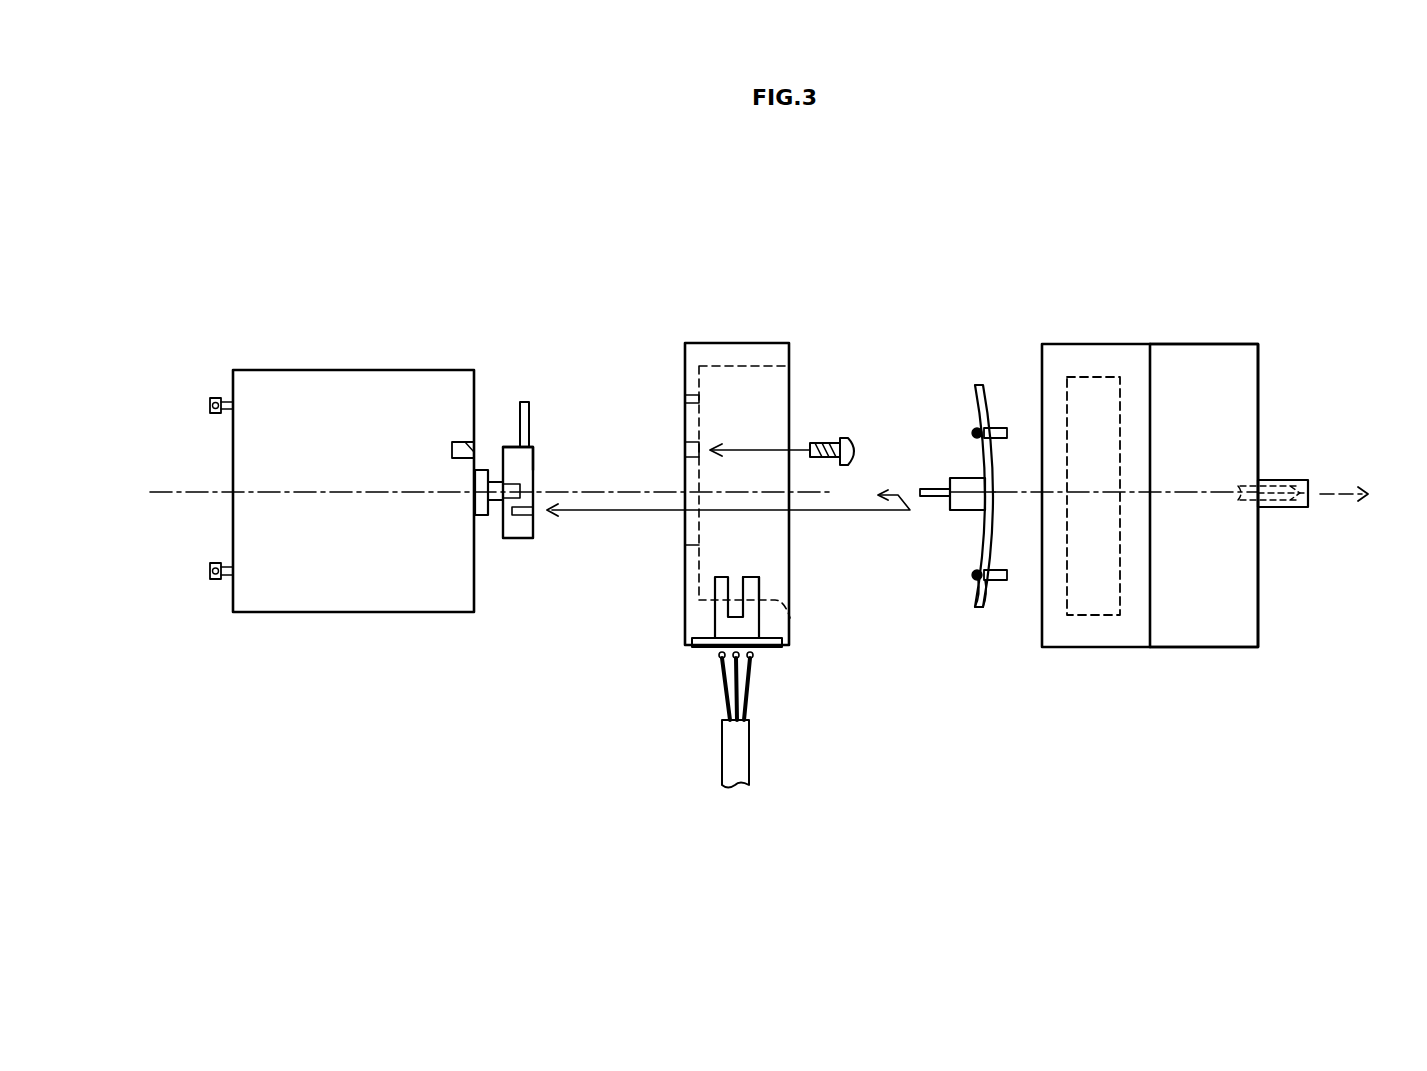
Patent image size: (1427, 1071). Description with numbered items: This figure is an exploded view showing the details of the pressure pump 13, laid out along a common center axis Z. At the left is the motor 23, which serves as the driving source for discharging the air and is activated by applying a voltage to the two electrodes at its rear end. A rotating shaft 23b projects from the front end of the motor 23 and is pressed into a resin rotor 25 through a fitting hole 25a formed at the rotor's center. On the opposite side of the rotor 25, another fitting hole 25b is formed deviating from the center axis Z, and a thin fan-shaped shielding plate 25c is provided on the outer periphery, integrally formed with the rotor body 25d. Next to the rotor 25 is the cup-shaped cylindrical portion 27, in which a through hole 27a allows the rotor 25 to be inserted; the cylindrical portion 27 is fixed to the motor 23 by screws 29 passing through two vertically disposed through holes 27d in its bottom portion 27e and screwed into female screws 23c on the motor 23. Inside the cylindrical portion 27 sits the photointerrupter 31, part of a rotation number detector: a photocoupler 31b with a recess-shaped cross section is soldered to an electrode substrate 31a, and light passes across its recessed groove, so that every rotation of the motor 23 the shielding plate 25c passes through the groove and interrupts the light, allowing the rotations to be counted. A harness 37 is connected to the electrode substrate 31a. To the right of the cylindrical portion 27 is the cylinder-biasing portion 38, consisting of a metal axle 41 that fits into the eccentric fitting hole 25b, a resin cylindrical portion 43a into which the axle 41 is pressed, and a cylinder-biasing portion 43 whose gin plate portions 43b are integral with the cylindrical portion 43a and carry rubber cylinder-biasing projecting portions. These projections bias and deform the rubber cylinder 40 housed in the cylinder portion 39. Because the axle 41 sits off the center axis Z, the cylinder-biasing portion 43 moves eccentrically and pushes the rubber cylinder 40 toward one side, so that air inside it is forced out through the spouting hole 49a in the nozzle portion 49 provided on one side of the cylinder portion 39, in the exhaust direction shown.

The pressure pump 13 is at (1142, 181).
The motor 23 is at (335, 388).
The rotating shaft 23b is at (492, 518).
The female screws 23c is at (476, 450).
The rotor 25 is at (525, 538).
The fitting hole 25a is at (522, 490).
The fitting hole 25b is at (533, 514).
The shielding plate 25c is at (528, 445).
The rotor body 25d is at (533, 455).
The cylindrical portion 27 is at (710, 352).
The through hole 27a is at (685, 400).
The through holes 27d is at (685, 450).
The bottom portion 27e is at (690, 600).
The screws 29 is at (846, 438).
The photointerrupter 31 is at (710, 622).
The electrode substrate 31a is at (762, 657).
The photocoupler 31b is at (792, 626).
The harness 37 is at (735, 757).
The cylinder-biasing portion 38 is at (963, 705).
The cylinder portion 39 is at (1082, 360).
The rubber cylinder 40 is at (1100, 398).
The axle 41 is at (938, 489).
The cylinder-biasing portion 43 is at (965, 480).
The cylindrical portion 43a is at (965, 510).
The gin plate portions 43b is at (972, 592).
The nozzle portion 49 is at (1202, 357).
The spouting hole 49a is at (1295, 467).